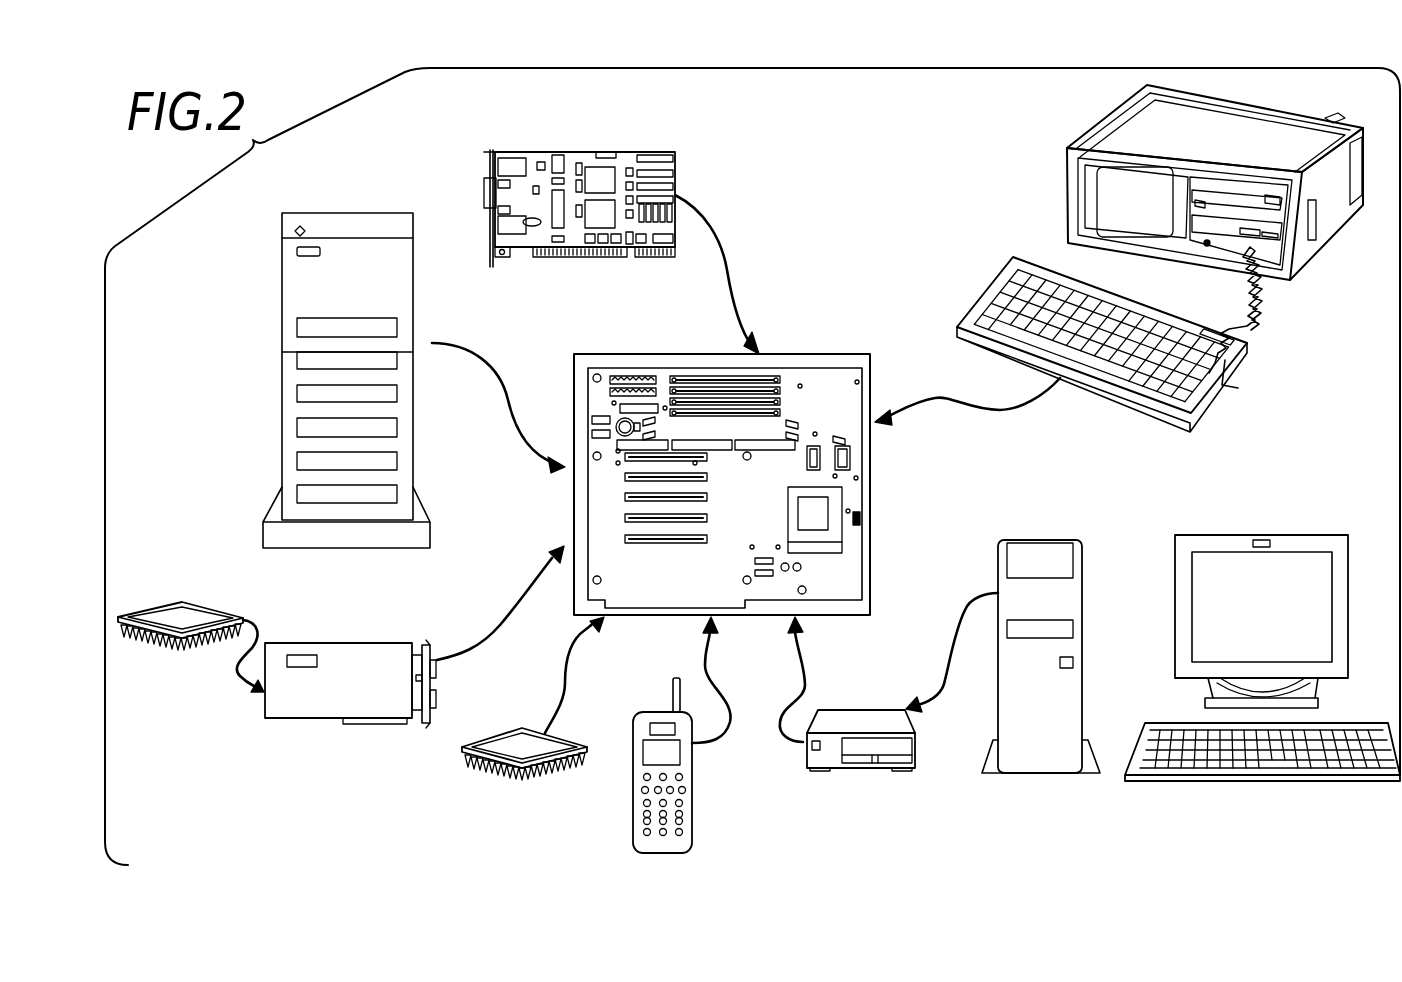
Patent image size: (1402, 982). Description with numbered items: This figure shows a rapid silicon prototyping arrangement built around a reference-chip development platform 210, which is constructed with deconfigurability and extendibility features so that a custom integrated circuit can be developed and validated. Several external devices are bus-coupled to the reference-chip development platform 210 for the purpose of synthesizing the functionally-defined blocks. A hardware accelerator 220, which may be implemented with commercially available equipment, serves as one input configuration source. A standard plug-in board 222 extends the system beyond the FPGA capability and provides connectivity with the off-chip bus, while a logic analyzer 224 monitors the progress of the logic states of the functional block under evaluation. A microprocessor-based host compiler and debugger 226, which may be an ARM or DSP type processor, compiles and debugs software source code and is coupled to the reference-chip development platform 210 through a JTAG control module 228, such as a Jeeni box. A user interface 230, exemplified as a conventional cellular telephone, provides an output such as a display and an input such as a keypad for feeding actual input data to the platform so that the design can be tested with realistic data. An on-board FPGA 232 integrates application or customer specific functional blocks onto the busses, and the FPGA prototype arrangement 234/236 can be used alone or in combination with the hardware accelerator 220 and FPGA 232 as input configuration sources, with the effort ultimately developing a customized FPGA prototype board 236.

The reference-chip development platform 210 is at (817, 352).
The hardware accelerator 220 is at (282, 262).
The standard plug-in board 222 is at (637, 152).
The logic analyzer 224 is at (1317, 240).
The microprocessor-based host compiler and debugger 226 is at (1382, 528).
The JTAG control module 228 is at (915, 745).
The user interface 230 is at (692, 778).
The on-board FPGA 232 is at (465, 780).
The FPGA prototype arrangement 234 is at (182, 645).
The customized FPGA prototype board 236 is at (373, 643).